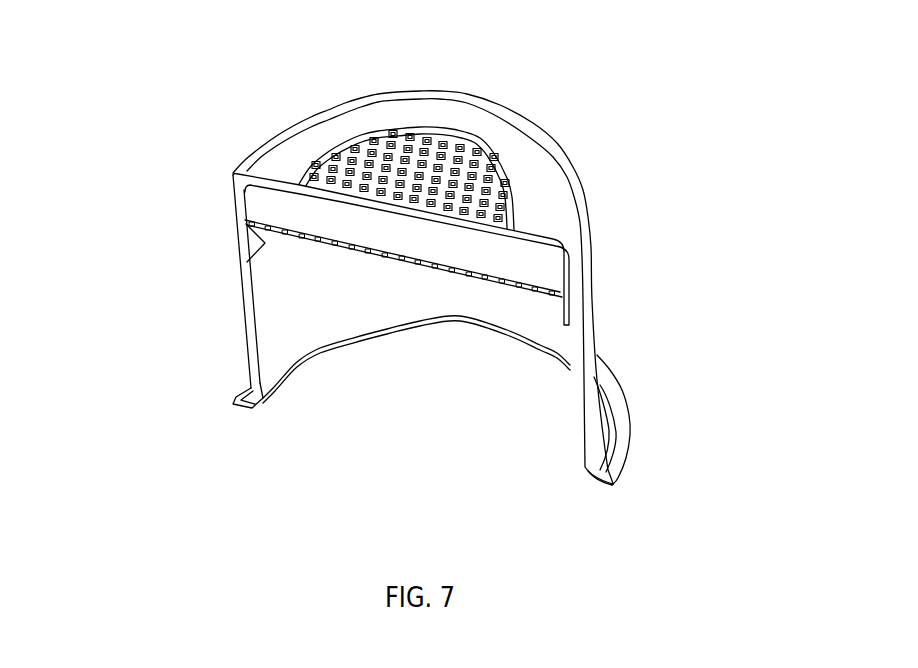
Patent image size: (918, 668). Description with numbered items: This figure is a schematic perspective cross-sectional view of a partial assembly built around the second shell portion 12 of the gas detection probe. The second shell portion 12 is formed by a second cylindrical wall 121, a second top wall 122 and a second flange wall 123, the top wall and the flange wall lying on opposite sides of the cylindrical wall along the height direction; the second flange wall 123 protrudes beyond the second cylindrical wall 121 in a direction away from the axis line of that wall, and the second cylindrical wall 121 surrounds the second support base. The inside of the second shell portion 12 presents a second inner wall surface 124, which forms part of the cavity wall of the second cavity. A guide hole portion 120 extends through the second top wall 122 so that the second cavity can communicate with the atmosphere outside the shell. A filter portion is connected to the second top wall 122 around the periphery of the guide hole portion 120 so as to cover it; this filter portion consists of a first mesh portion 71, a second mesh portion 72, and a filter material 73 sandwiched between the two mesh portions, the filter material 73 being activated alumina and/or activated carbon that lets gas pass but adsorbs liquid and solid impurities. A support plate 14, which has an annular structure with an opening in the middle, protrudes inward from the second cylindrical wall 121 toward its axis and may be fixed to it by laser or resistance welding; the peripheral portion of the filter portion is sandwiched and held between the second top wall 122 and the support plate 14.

The second shell portion 12 is at (298, 124).
The first mesh portion 71 is at (372, 138).
The guide hole portion 120 is at (406, 123).
The second top wall 122 is at (533, 160).
The filter material 73 is at (259, 203).
The support plate 14 is at (568, 290).
The second cylindrical wall 121 is at (250, 274).
The second inner wall surface 124 is at (277, 297).
The second mesh portion 72 is at (436, 266).
The second flange wall 123 is at (627, 440).